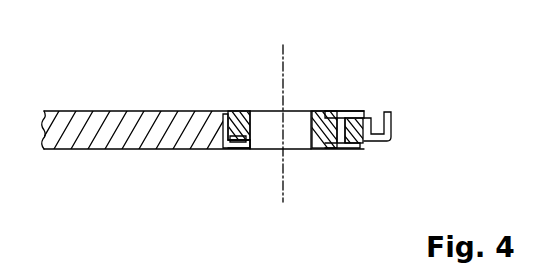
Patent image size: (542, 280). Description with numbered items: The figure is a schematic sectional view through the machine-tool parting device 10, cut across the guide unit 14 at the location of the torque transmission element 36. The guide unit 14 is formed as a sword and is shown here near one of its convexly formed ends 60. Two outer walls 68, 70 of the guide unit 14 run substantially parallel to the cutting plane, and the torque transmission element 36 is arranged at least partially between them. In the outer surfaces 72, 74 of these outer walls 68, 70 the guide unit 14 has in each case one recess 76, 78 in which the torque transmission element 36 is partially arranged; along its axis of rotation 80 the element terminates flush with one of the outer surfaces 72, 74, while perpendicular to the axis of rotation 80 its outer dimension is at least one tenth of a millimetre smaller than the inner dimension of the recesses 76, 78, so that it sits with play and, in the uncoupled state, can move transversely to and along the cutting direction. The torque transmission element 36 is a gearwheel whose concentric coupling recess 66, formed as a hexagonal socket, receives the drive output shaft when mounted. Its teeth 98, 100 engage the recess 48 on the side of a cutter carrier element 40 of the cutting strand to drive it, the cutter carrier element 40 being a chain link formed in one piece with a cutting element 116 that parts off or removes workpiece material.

The machine-tool parting device 10 is at (386, 62).
The guide unit 14 is at (62, 150).
The torque transmission element 36 is at (243, 150).
The cutter carrier element 40 is at (359, 150).
The recess 48 is at (341, 110).
The convexly formed end 60 is at (407, 172).
The coupling recess 66 is at (296, 137).
The outer wall 68 is at (135, 150).
The outer wall 70 is at (108, 110).
The outer surface 72 is at (167, 150).
The outer surface 74 is at (163, 110).
The recess 76 is at (237, 150).
The recess 78 is at (241, 110).
The axis of rotation 80 is at (287, 50).
The tooth 98 is at (228, 150).
The tooth 100 is at (320, 150).
The cutting element 116 is at (392, 130).